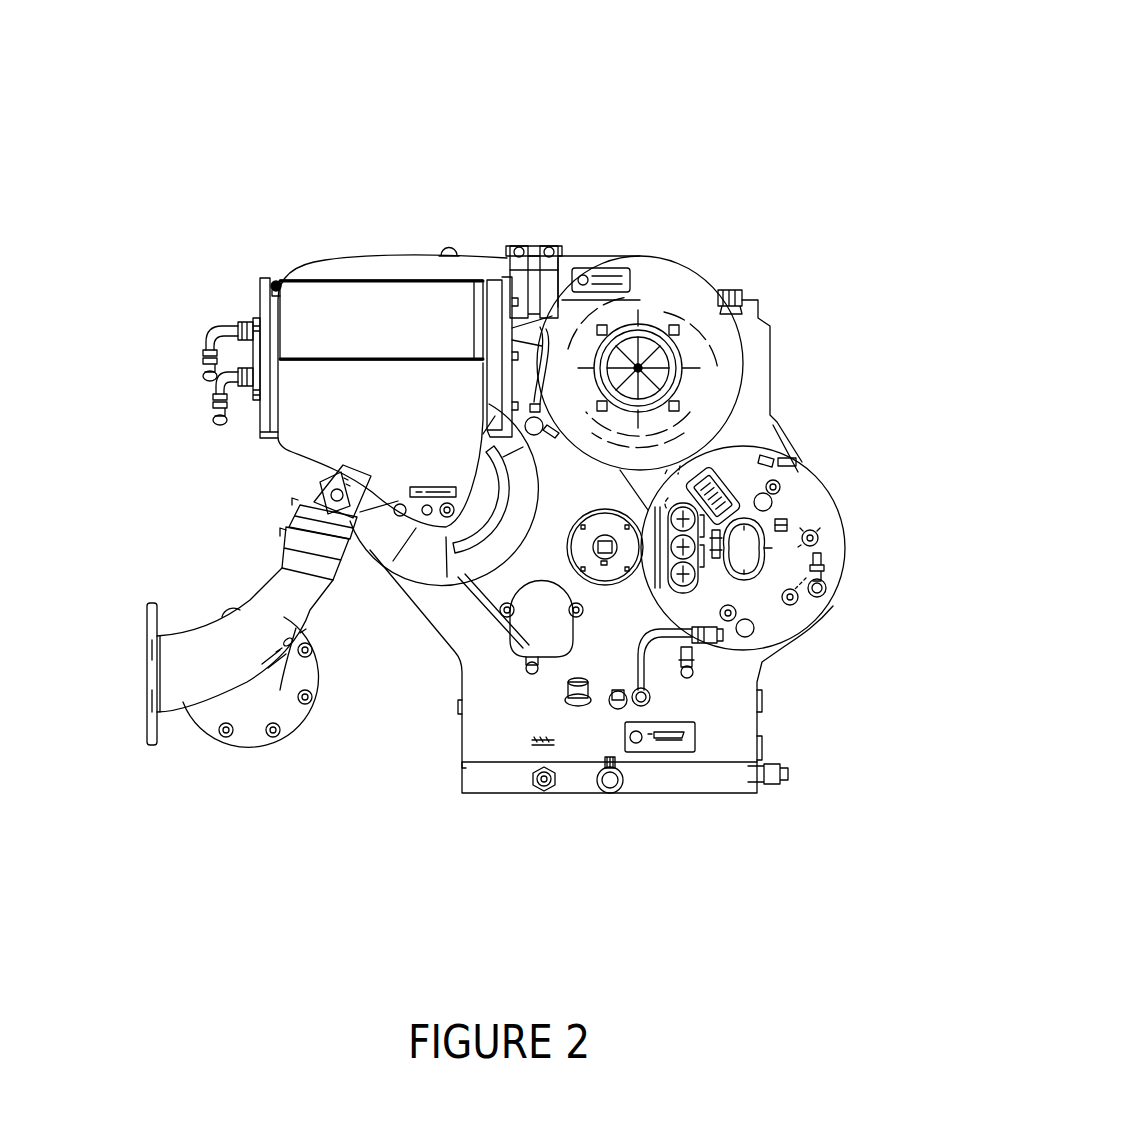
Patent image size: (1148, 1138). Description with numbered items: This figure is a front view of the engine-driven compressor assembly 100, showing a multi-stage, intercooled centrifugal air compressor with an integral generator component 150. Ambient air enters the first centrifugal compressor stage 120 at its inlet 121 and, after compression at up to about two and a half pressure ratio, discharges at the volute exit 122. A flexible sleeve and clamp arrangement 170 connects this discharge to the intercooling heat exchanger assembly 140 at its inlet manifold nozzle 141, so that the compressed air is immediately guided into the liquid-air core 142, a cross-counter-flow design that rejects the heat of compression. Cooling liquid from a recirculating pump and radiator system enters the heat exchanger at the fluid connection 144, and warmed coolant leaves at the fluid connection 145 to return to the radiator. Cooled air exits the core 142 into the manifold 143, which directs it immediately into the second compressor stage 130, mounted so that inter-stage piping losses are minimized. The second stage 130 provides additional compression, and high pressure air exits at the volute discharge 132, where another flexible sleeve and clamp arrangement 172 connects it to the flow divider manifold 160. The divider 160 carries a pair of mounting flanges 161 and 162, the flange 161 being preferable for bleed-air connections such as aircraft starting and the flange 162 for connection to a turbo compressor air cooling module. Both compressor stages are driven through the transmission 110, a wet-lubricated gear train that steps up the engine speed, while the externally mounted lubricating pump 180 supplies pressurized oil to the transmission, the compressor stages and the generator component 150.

The compressor assembly 100 is at (688, 128).
The transmission 110 is at (760, 688).
The first stage compressor 120 is at (687, 266).
The inlet 121 is at (677, 348).
The volute exit 122 is at (584, 250).
The second compressor stage 130 is at (425, 590).
The volute discharge 132 is at (307, 492).
The intercooling heat exchanger assembly 140 is at (350, 232).
The inlet manifold nozzle 141 is at (433, 240).
The liquid-air core 142 is at (302, 320).
The manifold 143 is at (278, 445).
The fluid connection 144 is at (208, 392).
The fluid connection 145 is at (197, 348).
The generator component 150 is at (832, 491).
The flow divider manifold 160 is at (250, 588).
The mounting flange 161 is at (145, 682).
The mounting flange 162 is at (264, 750).
The flexible sleeve and clamp arrangement 170 is at (537, 240).
The flexible sleeve and clamp arrangement 172 is at (281, 527).
The lubricating pump 180 is at (630, 508).